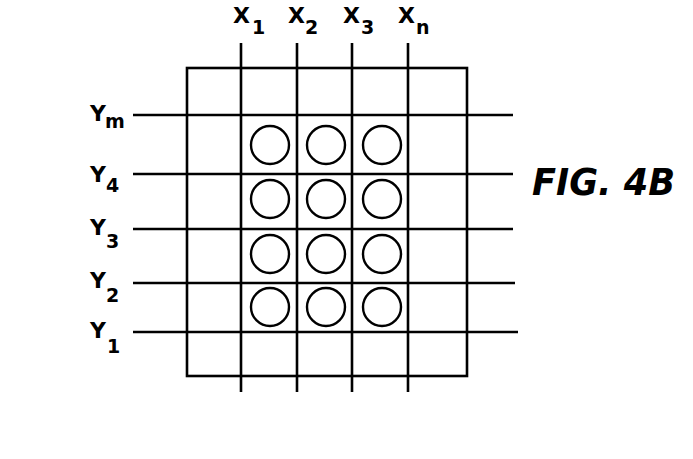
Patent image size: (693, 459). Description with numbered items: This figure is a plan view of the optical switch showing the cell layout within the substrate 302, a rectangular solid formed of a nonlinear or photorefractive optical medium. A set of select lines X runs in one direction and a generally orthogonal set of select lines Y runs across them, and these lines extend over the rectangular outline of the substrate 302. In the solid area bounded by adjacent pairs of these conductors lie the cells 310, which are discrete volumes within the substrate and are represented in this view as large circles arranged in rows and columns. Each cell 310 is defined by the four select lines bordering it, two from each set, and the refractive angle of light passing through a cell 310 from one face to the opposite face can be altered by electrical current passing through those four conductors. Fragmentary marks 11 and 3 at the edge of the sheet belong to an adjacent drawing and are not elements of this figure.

The substrate 302 is at (450, 357).
The cells 310 is at (369, 312).
The partial numeral from adjacent figure 11 is at (617, 20).
The partial numeral from adjacent figure 3 is at (680, 2).